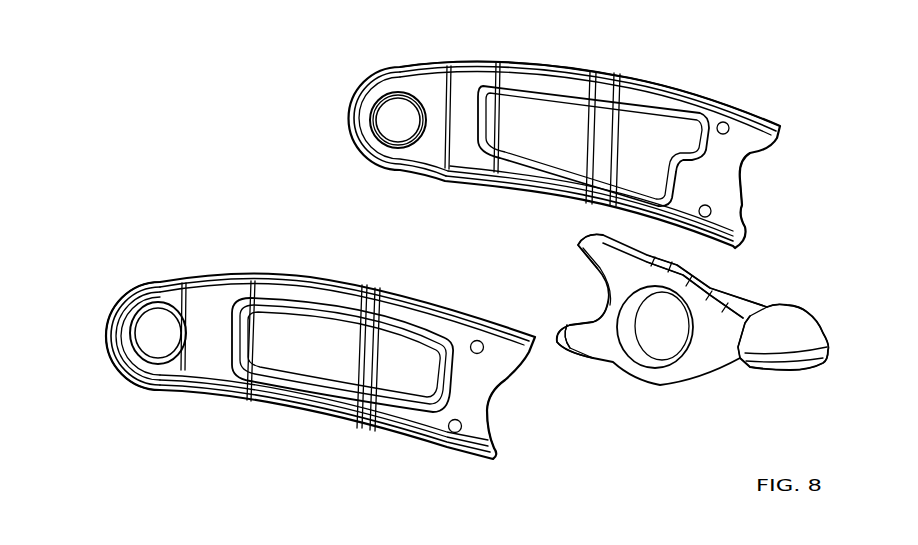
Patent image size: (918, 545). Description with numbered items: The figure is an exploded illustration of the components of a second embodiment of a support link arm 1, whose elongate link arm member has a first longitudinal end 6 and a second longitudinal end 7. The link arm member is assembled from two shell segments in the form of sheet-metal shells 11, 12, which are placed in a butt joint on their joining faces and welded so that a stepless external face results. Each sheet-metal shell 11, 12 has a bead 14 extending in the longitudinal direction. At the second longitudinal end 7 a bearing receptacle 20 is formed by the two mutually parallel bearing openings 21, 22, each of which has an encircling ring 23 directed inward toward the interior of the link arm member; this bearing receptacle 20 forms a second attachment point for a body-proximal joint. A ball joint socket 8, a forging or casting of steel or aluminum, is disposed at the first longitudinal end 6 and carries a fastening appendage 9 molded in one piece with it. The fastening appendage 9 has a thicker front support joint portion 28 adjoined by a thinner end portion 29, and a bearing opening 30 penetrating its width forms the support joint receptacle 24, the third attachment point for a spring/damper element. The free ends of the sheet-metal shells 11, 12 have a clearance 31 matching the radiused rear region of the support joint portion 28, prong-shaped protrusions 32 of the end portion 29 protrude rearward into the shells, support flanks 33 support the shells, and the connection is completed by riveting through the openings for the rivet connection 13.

The support link arm 1 is at (770, 82).
The first longitudinal end 6 is at (793, 126).
The second longitudinal end 7 is at (167, 264).
The ball joint socket 8 is at (810, 320).
The fastening appendage 9 is at (666, 384).
The sheet-metal shell 11 is at (300, 406).
The sheet-metal shell 12 is at (652, 82).
The rivet connection 13 is at (727, 122).
The bead 14 is at (555, 118).
The bearing receptacle 20 is at (112, 363).
The bearing opening 21 is at (160, 345).
The bearing opening 22 is at (388, 130).
The encircling ring 23 is at (425, 95).
The support joint receptacle 24 is at (644, 349).
The front support joint portion 28 is at (705, 300).
The end portion 29 is at (596, 362).
The bearing opening 30 is at (682, 342).
The clearance 31 is at (742, 182).
The prong-shaped protrusion 32 is at (585, 258).
The support flank 33 is at (575, 320).